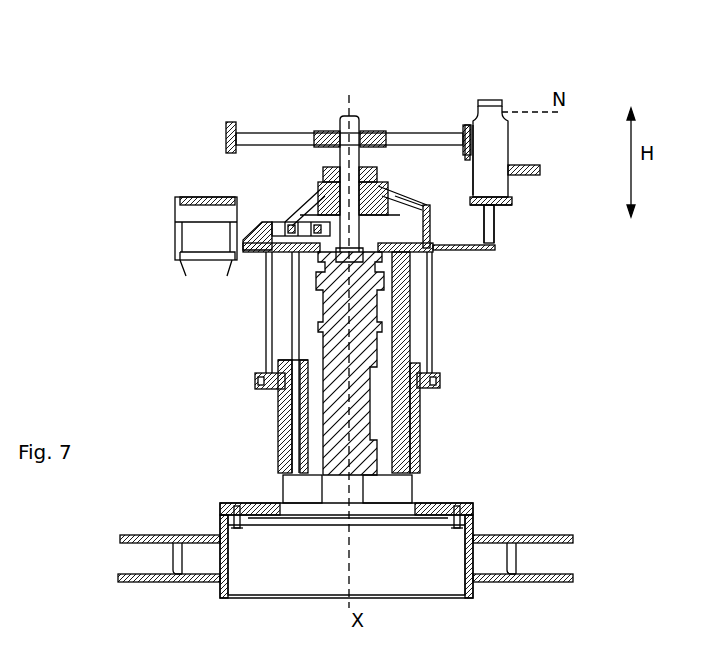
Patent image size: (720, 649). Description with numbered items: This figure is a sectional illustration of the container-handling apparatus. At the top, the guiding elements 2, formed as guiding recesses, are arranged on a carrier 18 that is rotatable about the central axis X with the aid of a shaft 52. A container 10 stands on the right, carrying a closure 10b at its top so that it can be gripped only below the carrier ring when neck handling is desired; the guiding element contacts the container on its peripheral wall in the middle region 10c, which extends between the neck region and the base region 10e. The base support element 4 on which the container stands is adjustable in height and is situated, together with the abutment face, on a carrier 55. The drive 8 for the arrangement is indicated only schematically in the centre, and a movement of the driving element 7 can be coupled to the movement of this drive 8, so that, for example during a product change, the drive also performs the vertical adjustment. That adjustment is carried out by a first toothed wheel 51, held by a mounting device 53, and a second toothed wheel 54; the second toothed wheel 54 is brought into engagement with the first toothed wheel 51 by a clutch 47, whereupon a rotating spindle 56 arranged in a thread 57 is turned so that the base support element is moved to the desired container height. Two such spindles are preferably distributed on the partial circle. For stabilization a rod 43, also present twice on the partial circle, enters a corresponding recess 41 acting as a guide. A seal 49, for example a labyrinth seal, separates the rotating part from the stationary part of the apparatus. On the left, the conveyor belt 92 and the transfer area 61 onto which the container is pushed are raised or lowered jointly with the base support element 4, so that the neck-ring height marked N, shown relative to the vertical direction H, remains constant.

The guiding element 2 is at (468, 125).
The base support element 4 is at (508, 201).
The driving element 7 is at (493, 249).
The drive 8 is at (358, 291).
The container 10 is at (521, 154).
The closure 10b is at (491, 101).
The middle region 10c is at (498, 143).
The base region 10e is at (490, 189).
The carrier 18 is at (418, 132).
The recess 41 is at (412, 391).
The rod 43 is at (403, 413).
The clutch 47 is at (320, 213).
The seal 49 is at (378, 168).
The first toothed wheel 51 is at (380, 212).
The shaft 52 is at (344, 172).
The mounting device 53 is at (322, 213).
The second toothed wheel 54 is at (310, 233).
The carrier 55 is at (457, 251).
The rotating spindle 56 is at (296, 323).
The thread 57 is at (307, 409).
The transfer area 61 is at (195, 197).
The conveyor belt 92 is at (207, 233).